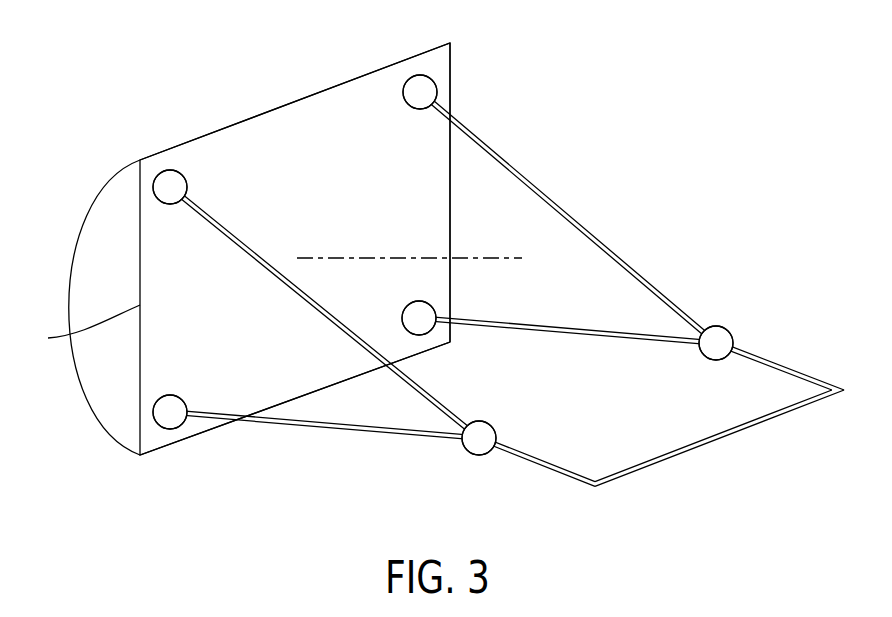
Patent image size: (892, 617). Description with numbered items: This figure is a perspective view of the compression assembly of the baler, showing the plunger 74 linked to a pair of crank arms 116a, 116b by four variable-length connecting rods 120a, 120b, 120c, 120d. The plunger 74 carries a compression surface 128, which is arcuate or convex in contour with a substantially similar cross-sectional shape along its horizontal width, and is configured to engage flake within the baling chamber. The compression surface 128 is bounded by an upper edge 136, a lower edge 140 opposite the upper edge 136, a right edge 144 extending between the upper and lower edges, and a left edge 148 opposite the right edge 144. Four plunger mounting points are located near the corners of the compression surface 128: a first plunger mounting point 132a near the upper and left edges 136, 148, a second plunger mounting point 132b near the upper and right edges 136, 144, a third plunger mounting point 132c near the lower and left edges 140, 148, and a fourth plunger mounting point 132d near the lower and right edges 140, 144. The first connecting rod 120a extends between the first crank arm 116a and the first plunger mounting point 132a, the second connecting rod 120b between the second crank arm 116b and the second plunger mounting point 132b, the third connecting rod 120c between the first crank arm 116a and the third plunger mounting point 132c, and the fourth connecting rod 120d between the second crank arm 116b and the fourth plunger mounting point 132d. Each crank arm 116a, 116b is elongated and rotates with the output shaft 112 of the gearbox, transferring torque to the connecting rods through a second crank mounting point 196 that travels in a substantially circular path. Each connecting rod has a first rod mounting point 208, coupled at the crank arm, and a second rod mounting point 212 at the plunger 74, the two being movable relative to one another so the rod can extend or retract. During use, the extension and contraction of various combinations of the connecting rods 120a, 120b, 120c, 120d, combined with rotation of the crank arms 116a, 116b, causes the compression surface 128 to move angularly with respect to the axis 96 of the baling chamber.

The plunger 74 is at (288, 128).
The axis 96 is at (514, 259).
The output shaft 112 is at (680, 455).
The first crank arm 116a is at (532, 462).
The second crank arm 116b is at (783, 364).
The first connecting rod 120a is at (218, 225).
The second connecting rod 120b is at (508, 170).
The third connecting rod 120c is at (272, 425).
The fourth connecting rod 120d is at (558, 335).
The compression surface 128 is at (76, 210).
The first plunger mounting point 132a is at (185, 178).
The second plunger mounting point 132b is at (437, 88).
The third plunger mounting point 132c is at (183, 398).
The fourth plunger mounting point 132d is at (432, 330).
The upper edge 136 is at (358, 77).
The lower edge 140 is at (303, 395).
The right edge 144 is at (452, 225).
The left edge 148 is at (80, 330).
The second crank mounting point 196 is at (710, 353).
The first rod mounting point 208 is at (735, 337).
The second rod mounting point 212 is at (170, 192).